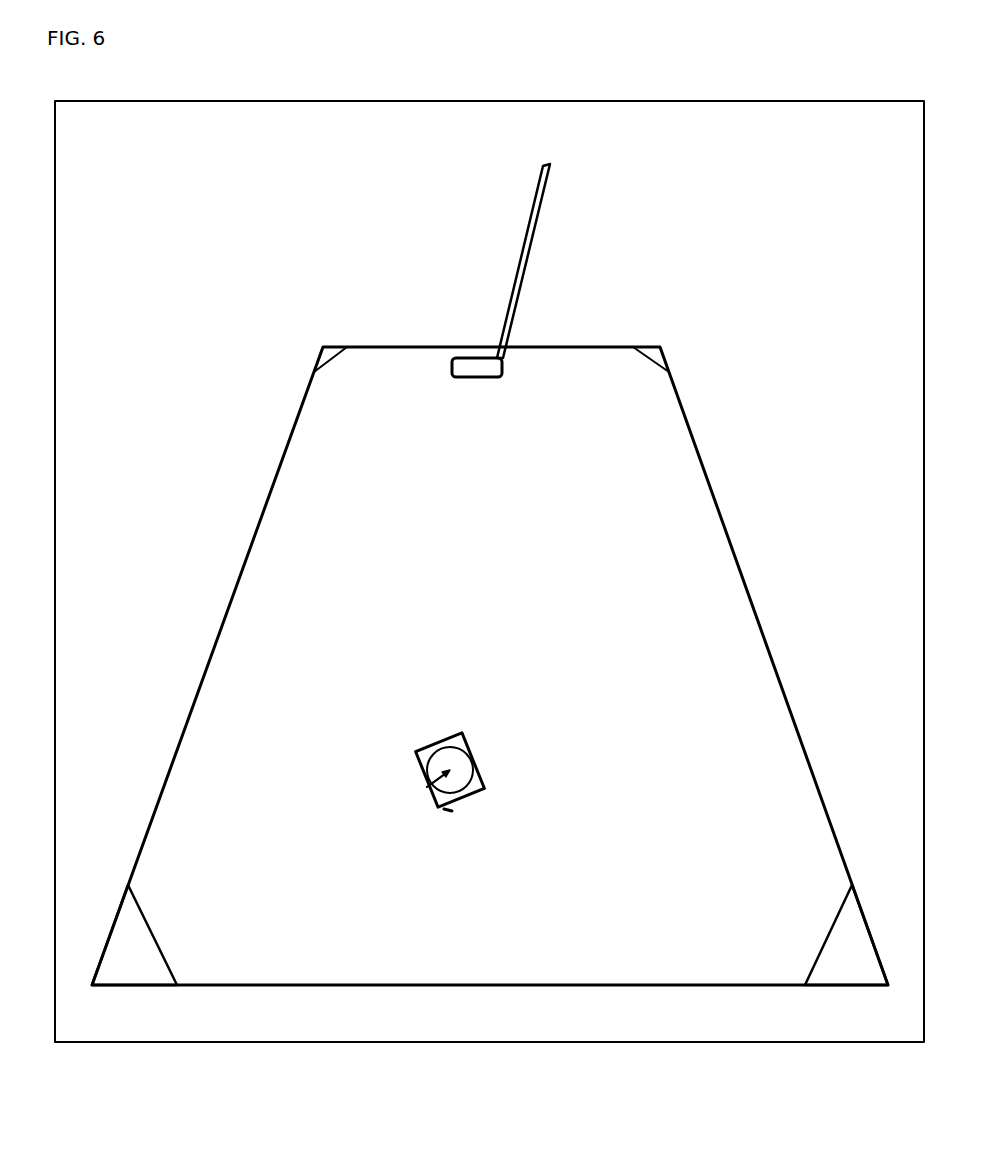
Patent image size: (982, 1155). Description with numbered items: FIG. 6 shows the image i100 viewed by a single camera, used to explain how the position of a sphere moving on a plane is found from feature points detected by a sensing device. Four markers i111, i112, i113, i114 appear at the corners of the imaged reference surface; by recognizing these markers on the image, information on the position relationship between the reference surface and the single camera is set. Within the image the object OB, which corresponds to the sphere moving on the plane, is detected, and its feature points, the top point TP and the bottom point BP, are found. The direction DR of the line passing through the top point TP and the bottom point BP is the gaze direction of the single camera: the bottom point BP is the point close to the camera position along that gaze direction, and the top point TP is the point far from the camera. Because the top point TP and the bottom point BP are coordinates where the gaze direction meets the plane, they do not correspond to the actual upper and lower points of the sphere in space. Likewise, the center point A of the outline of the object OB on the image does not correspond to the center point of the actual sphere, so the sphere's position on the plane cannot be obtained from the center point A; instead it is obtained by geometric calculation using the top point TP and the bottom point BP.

The captured image / imaging area i100 is at (240, 572).
The marker i111 is at (135, 947).
The marker i112 is at (842, 947).
The marker i113 is at (661, 347).
The marker i114 is at (322, 346).
The top point TP is at (449, 737).
The object OB is at (477, 777).
The direction DR is at (418, 767).
The center point of the outline of the object A is at (430, 785).
The bottom point BP is at (448, 810).